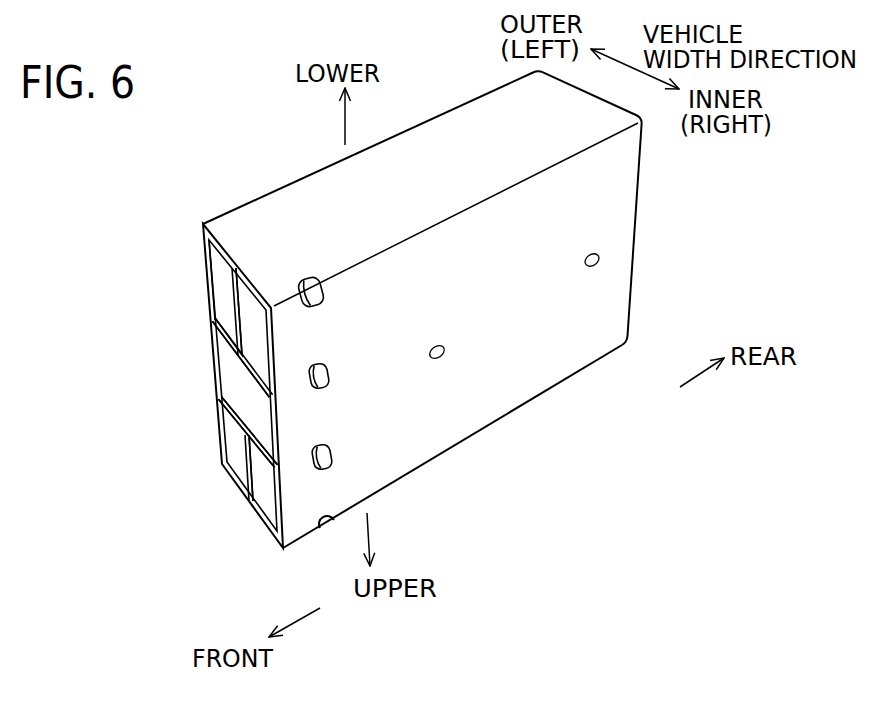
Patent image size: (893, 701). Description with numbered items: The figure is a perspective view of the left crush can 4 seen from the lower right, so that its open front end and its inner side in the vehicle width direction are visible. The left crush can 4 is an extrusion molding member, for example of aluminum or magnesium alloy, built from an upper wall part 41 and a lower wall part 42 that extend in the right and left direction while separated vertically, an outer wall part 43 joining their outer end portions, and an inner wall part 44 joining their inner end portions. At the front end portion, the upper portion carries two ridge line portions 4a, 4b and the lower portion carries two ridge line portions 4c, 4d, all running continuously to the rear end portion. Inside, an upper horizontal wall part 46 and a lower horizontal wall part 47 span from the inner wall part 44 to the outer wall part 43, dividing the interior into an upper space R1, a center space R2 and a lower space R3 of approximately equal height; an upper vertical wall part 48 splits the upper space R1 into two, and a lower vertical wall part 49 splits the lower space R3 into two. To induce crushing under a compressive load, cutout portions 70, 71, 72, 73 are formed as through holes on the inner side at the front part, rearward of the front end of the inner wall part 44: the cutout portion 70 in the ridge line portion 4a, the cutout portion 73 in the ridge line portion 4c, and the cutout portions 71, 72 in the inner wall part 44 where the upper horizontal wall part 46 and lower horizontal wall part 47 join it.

The left crush can 4 is at (467, 97).
The ridge line portion 4a is at (240, 488).
The ridge line portion 4b is at (433, 461).
The ridge line portion 4c is at (228, 213).
The ridge line portion 4d is at (590, 147).
The upper wall part 41 is at (263, 526).
The lower wall part 42 is at (417, 170).
The outer wall part 43 is at (234, 285).
The inner wall part 44 is at (520, 378).
The upper horizontal wall part 46 is at (223, 426).
The lower horizontal wall part 47 is at (218, 342).
The upper vertical wall part 48 is at (242, 472).
The lower vertical wall part 49 is at (230, 290).
The cutout portion 70 is at (328, 531).
The cutout portion 71 is at (320, 447).
The cutout portion 72 is at (320, 363).
The cutout portion 73 is at (313, 277).
The upper space R1 is at (273, 513).
The center space R2 is at (250, 394).
The lower space R3 is at (252, 320).